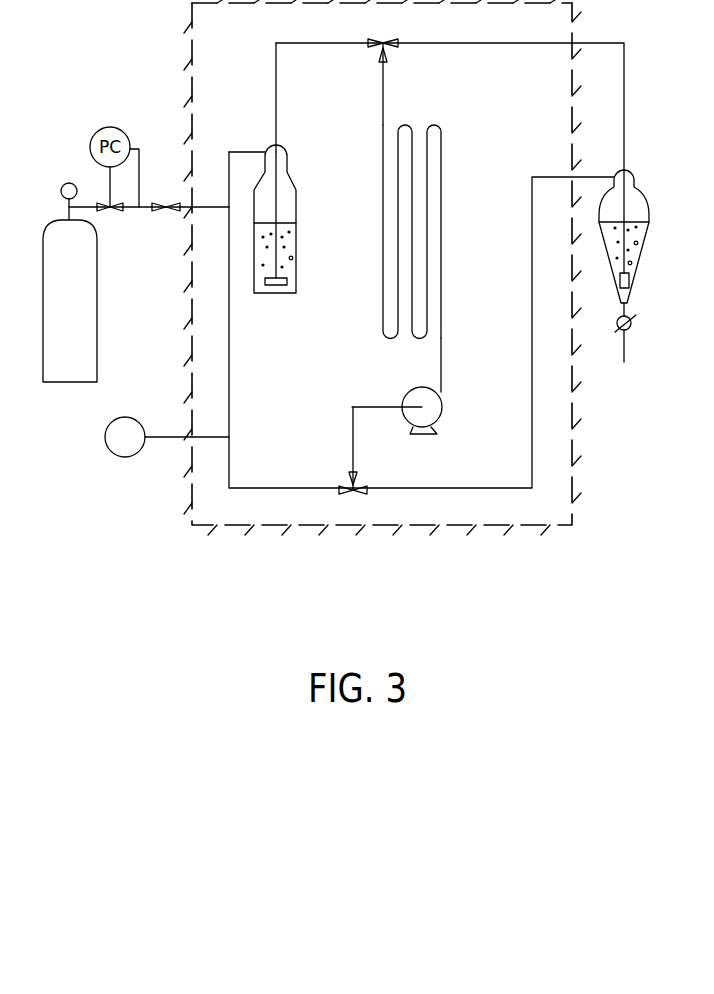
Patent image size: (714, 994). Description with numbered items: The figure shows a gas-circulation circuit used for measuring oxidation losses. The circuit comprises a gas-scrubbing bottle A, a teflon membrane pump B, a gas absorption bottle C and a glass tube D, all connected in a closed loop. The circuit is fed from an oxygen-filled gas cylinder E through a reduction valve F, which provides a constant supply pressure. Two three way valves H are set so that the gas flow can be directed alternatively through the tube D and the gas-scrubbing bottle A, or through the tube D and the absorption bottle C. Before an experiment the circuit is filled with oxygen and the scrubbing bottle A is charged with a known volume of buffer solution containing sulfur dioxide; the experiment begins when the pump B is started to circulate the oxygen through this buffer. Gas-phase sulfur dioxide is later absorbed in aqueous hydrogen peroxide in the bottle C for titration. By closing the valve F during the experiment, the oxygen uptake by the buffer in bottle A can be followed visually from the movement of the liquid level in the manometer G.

The gas-scrubbing bottle A is at (286, 219).
The teflon membrane pump B is at (431, 410).
The gas absorption bottle C is at (631, 266).
The glass tube D is at (424, 232).
The oxygen-filled gas cylinder E is at (58, 282).
The reduction valve F is at (165, 223).
The manometer G is at (125, 452).
The three way valves H is at (368, 254).